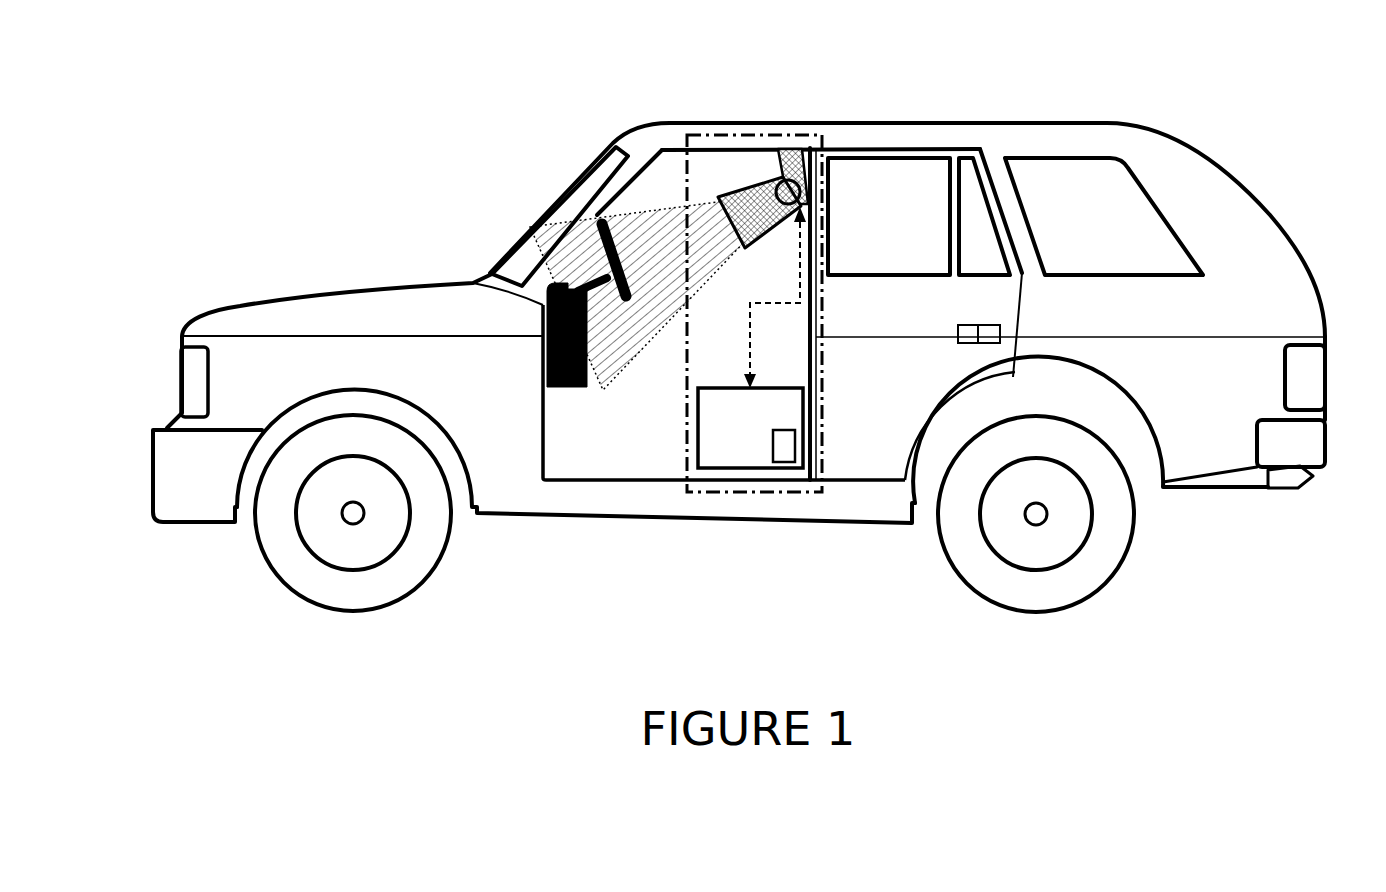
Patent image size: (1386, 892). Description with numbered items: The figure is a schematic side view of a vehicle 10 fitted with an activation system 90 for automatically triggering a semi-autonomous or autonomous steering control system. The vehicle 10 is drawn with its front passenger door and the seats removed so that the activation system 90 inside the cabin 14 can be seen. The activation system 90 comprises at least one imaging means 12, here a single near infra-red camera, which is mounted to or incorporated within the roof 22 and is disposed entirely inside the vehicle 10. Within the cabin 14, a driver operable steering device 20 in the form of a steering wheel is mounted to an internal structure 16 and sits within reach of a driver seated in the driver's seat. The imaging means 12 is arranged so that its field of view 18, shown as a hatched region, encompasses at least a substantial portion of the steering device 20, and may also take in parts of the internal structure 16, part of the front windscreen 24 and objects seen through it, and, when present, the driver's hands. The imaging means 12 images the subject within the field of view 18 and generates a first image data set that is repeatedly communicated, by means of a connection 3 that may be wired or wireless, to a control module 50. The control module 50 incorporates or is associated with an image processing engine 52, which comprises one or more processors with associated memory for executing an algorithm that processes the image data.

The vehicle 10 is at (368, 242).
The imaging means 12 is at (743, 188).
The cabin 14 is at (608, 473).
The internal structure 16 is at (562, 378).
The field of view 18 is at (656, 228).
The driver operable steering device 20 is at (610, 258).
The roof 22 is at (673, 137).
The front windscreen 24 is at (507, 255).
The connection 3 is at (748, 312).
The control module 50 is at (716, 445).
The image processing engine 52 is at (786, 457).
The activation system 90 is at (822, 323).